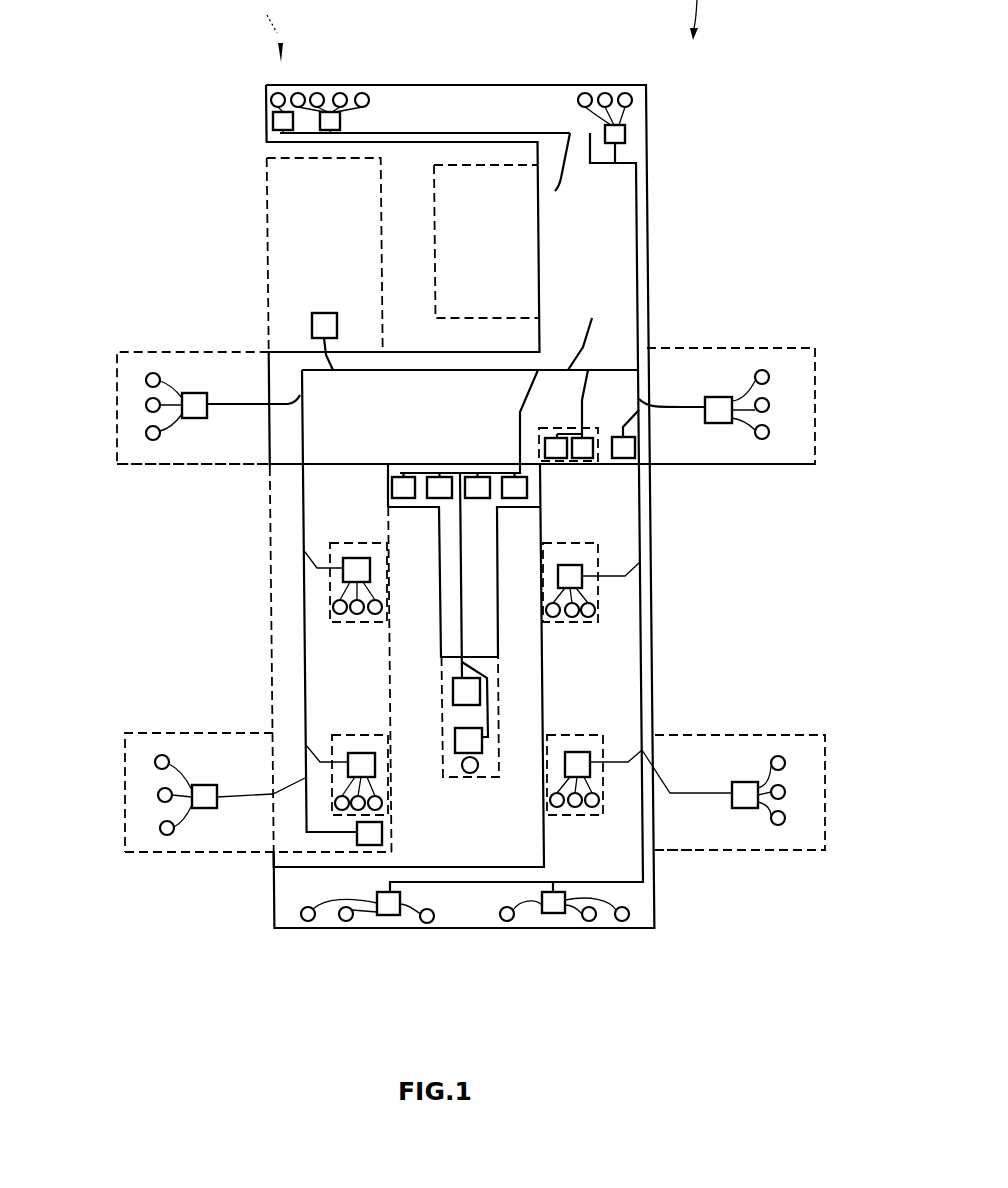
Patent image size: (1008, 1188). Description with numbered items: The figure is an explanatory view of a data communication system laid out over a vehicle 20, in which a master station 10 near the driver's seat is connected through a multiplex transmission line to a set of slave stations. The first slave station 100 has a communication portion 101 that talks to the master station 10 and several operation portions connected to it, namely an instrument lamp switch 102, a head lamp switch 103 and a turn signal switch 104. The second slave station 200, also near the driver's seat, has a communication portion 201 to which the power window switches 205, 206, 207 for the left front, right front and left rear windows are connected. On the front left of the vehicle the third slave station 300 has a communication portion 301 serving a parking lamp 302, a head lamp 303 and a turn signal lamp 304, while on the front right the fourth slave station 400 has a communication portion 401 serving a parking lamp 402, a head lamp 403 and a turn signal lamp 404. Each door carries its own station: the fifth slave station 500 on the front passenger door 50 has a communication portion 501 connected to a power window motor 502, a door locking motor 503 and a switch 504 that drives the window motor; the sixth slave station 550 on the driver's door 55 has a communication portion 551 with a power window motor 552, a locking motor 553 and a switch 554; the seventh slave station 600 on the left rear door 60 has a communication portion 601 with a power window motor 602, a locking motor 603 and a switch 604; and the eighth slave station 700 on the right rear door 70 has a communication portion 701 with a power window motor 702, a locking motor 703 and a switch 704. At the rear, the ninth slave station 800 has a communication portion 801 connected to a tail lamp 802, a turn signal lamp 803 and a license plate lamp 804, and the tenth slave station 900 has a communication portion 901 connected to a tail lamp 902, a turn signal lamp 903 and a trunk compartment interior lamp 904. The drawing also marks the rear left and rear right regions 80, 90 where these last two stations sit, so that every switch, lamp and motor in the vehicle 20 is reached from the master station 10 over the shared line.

The master station 10 is at (501, 549).
The vehicle 20 is at (647, 237).
The door 50 is at (234, 470).
The door 55 is at (693, 470).
The door 60 is at (262, 868).
The door 70 is at (668, 858).
The bottom left connector slot 80 is at (324, 979).
The bottom right connector slot 90 is at (640, 978).
The first slave station 100 is at (301, 605).
The communication portion 101 is at (352, 556).
The instrument lamp switch 102 is at (342, 614).
The head lamp switch 103 is at (358, 614).
The turn signal switch 104 is at (376, 614).
The second slave station 200 is at (644, 605).
The communication portion 201 is at (567, 564).
The switch 205 is at (555, 617).
The switch 206 is at (574, 617).
The switch 207 is at (590, 617).
The third slave station 300 is at (357, 69).
The communication portion 301 is at (341, 118).
The parking lamp 302 is at (318, 91).
The head lamp 303 is at (342, 92).
The turn signal lamp 304 is at (364, 92).
The fourth slave station 400 is at (638, 85).
The communication portion 401 is at (626, 140).
The parking lamp 402 is at (586, 92).
The head lamp 403 is at (607, 92).
The turn signal lamp 404 is at (628, 92).
The fifth slave station 500 is at (167, 409).
The communication portion 501 is at (195, 391).
The power window motor 502 is at (146, 378).
The motor 503 is at (146, 404).
The switch 504 is at (146, 432).
The sixth slave station 550 is at (762, 411).
The communication portion 551 is at (717, 396).
The power window motor 552 is at (769, 377).
The motor 553 is at (769, 405).
The switch 554 is at (769, 432).
The seventh slave station 600 is at (186, 833).
The communication portion 601 is at (205, 810).
The power window motor 602 is at (155, 760).
The motor 603 is at (158, 795).
The switch 604 is at (160, 826).
The eighth slave station 700 is at (763, 829).
The communication portion 701 is at (750, 810).
The power window motor 702 is at (785, 763).
The motor 703 is at (785, 792).
The switch 704 is at (785, 818).
The ninth slave station 800 is at (386, 975).
The communication portion 801 is at (390, 918).
The tail lamp 802 is at (308, 921).
The turn signal lamp 803 is at (346, 921).
The license plate lamp 804 is at (427, 923).
The tenth slave station 900 is at (578, 970).
The communication portion 901 is at (553, 916).
The tail lamp 902 is at (507, 921).
The turn signal lamp 903 is at (589, 921).
The trunk compartment interior lamp 904 is at (622, 921).